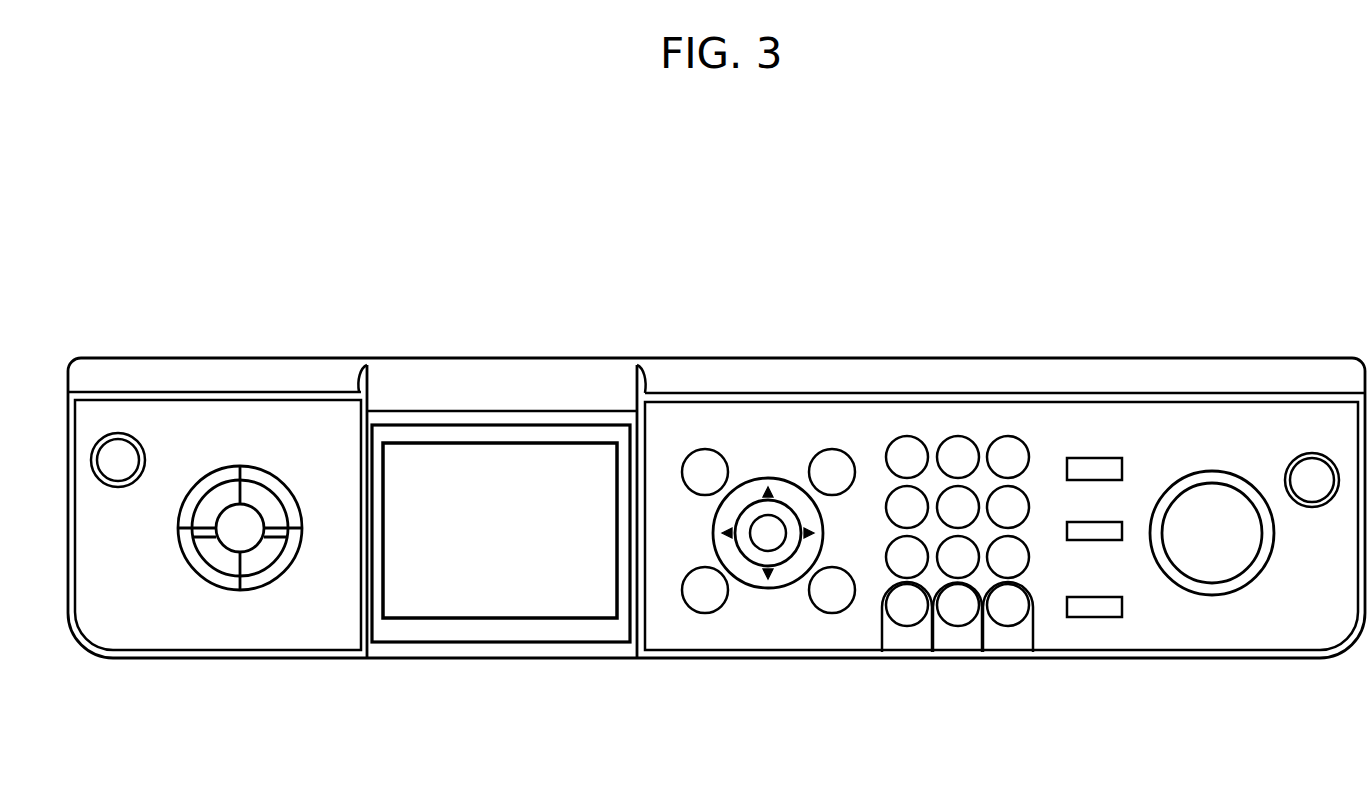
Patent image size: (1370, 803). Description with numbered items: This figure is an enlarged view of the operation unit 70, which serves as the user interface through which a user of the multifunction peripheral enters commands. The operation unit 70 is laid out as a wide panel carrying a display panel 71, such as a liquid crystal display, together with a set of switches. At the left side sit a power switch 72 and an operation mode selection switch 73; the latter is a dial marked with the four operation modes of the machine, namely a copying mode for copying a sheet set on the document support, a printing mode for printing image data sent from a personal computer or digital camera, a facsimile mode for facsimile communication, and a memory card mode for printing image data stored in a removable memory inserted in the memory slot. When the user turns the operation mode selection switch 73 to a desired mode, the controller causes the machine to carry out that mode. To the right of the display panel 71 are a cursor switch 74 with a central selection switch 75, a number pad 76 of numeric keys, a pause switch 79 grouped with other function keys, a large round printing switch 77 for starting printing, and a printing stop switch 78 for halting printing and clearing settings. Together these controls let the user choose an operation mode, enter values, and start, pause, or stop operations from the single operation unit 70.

The operation unit 70 is at (1055, 358).
The display panel 71 is at (503, 619).
The power switch 72 is at (118, 488).
The operation mode selection switch 73 is at (240, 606).
The cursor switch 74 is at (768, 589).
The selection switch 75 is at (781, 548).
The number pad 76 is at (873, 668).
The printing switch 77 is at (1216, 596).
The printing stop switch 78 is at (1311, 508).
The pause switch 79 is at (1096, 618).